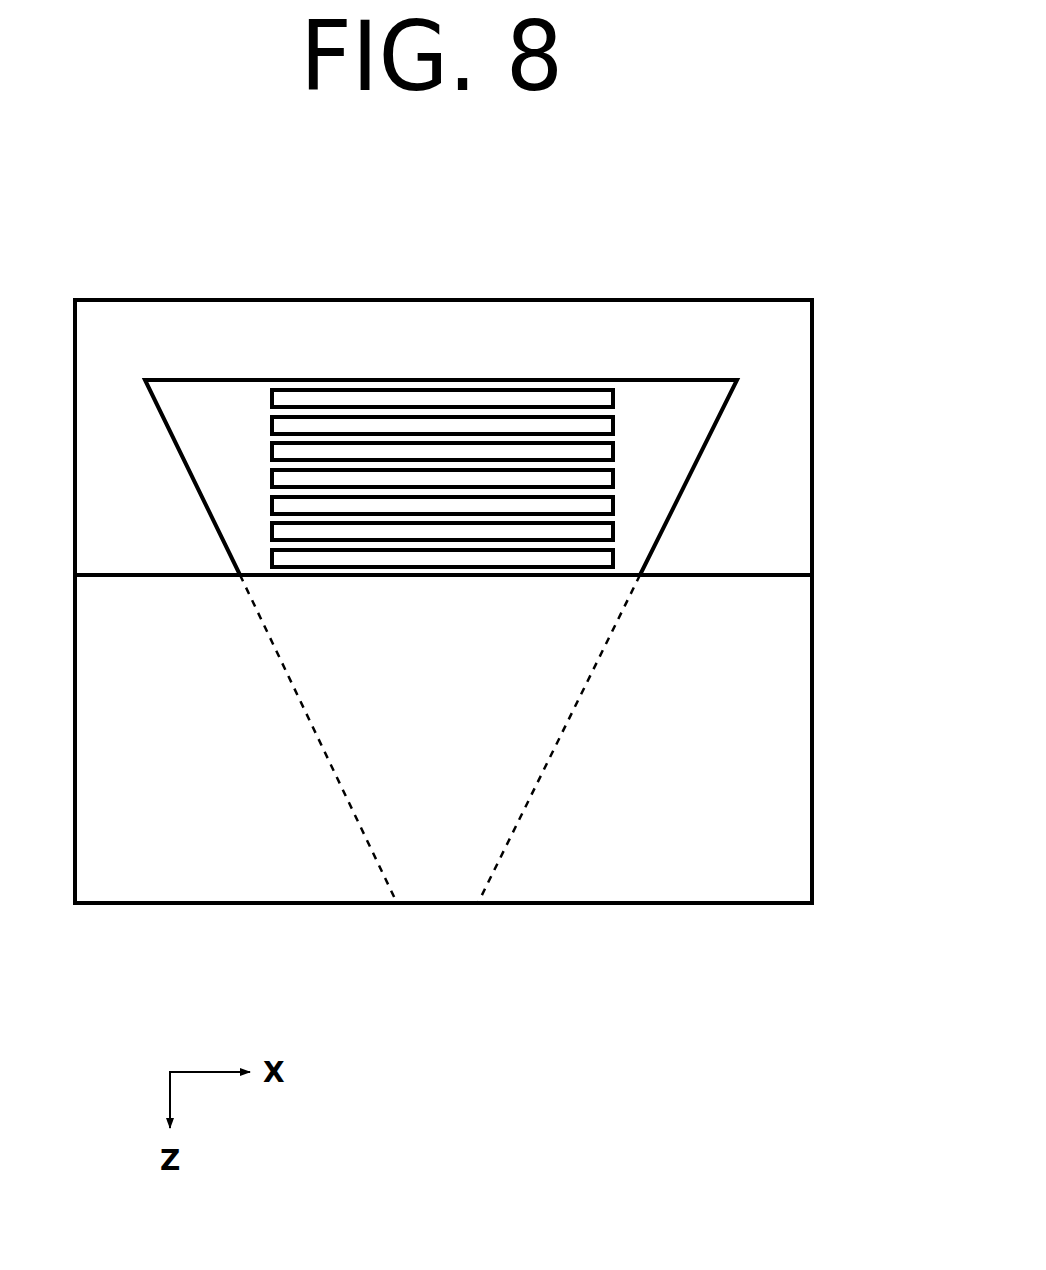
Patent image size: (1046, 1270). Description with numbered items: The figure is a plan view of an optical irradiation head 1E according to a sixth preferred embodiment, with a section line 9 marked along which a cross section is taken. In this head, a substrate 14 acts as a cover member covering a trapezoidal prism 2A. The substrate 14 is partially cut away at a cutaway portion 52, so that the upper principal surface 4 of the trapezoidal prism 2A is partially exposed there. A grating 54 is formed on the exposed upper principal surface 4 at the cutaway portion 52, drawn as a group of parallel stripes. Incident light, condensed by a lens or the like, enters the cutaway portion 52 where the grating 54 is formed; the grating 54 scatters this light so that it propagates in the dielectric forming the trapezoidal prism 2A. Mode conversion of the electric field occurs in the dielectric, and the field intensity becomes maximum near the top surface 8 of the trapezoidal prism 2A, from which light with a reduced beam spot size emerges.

The optical irradiation head 1E is at (557, 297).
The trapezoidal prism 2A is at (578, 378).
The upper principal surface 4 is at (203, 390).
The top surface 8 is at (458, 905).
The line 9- 9 is at (445, 290).
The substrate 14 is at (680, 878).
The cutaway portion 52 is at (767, 502).
The grating 54 is at (623, 390).